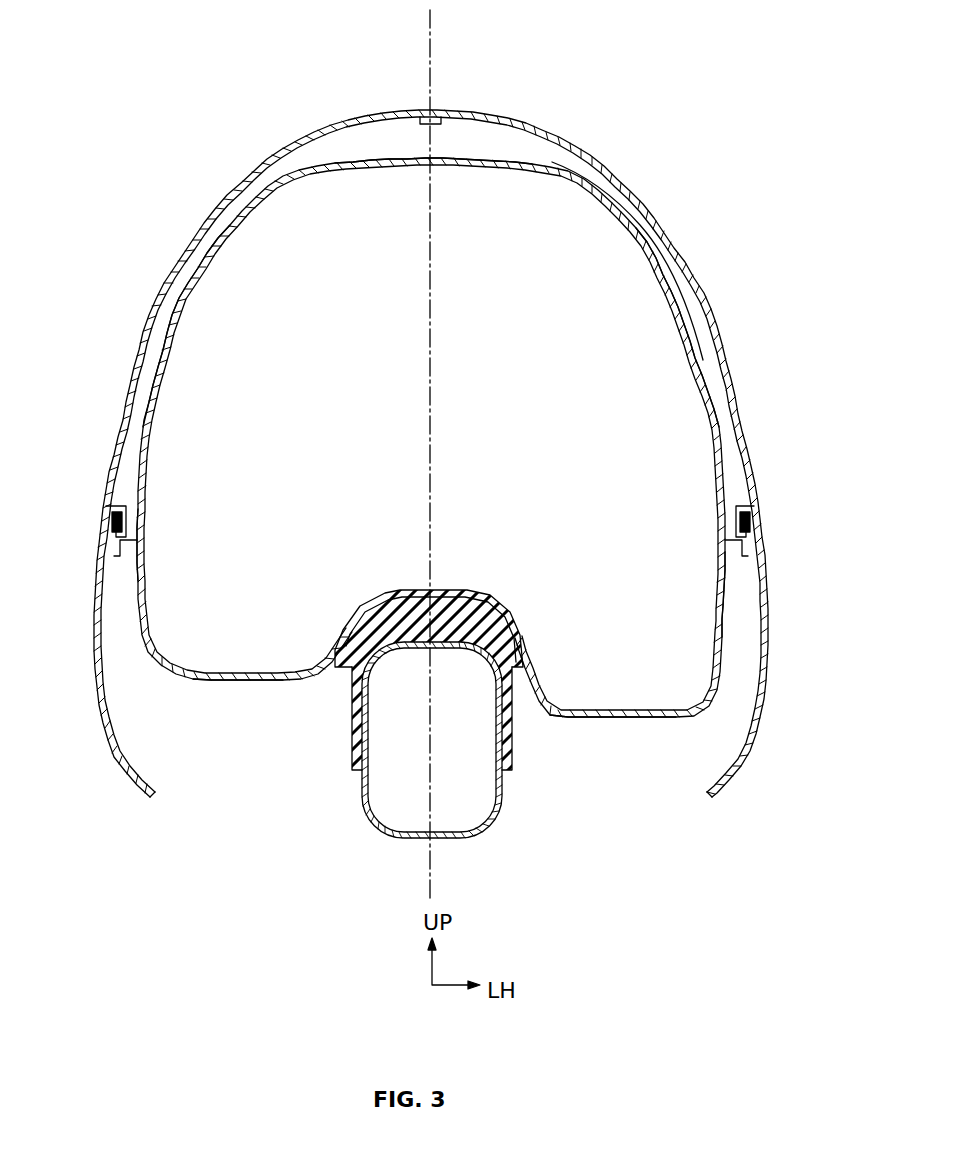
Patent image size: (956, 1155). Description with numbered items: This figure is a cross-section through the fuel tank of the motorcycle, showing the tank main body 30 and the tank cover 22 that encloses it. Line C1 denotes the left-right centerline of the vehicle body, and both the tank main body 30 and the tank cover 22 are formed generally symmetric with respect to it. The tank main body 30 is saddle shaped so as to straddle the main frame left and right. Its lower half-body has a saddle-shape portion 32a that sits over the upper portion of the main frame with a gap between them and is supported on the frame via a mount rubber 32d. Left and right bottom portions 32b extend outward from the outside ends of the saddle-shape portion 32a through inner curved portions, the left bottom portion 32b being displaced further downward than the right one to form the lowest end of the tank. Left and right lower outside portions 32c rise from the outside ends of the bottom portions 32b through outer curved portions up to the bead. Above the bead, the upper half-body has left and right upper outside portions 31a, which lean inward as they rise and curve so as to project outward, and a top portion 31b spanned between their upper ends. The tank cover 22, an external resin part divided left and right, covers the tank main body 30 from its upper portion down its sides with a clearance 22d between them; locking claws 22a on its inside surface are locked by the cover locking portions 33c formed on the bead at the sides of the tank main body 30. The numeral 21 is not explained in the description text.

The left-right centerline C1 is at (426, 20).
The tank cover 22 is at (531, 128).
The locking claw 22a is at (118, 503).
The clearance 22d is at (675, 285).
The tank main body 30 is at (550, 165).
The body assembly 21 is at (431, 439).
The upper outside portion 31a is at (199, 268).
The top portion 31b is at (374, 158).
The saddle-shape portion 32a is at (362, 604).
The bottom portion 32b is at (250, 682).
The lower outside portion 32c is at (138, 608).
The mount rubber 32d is at (352, 668).
The cover locking portion 33c is at (116, 526).